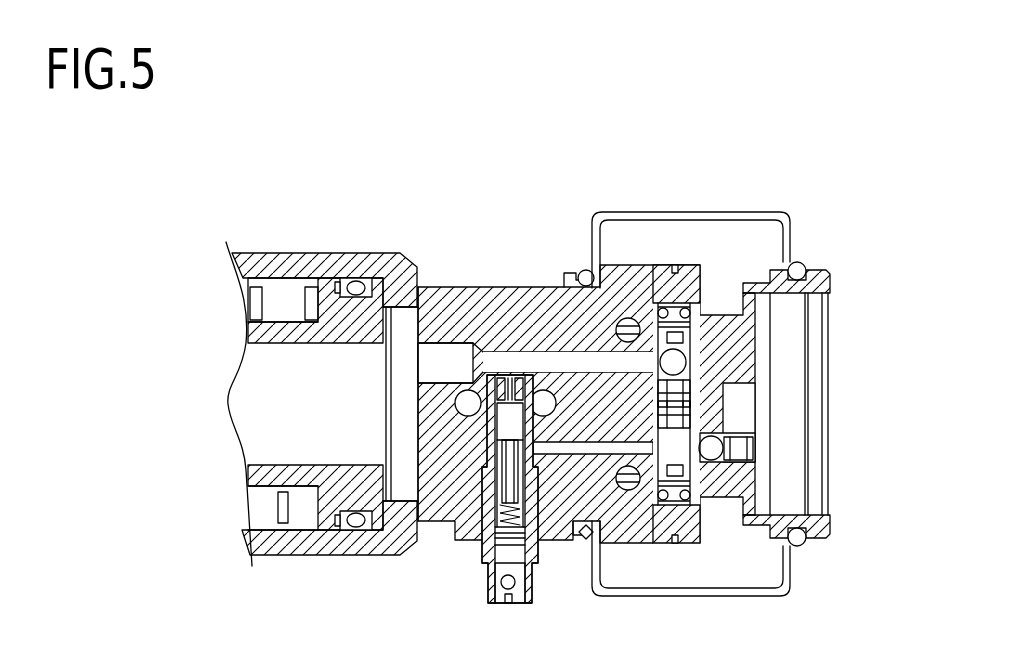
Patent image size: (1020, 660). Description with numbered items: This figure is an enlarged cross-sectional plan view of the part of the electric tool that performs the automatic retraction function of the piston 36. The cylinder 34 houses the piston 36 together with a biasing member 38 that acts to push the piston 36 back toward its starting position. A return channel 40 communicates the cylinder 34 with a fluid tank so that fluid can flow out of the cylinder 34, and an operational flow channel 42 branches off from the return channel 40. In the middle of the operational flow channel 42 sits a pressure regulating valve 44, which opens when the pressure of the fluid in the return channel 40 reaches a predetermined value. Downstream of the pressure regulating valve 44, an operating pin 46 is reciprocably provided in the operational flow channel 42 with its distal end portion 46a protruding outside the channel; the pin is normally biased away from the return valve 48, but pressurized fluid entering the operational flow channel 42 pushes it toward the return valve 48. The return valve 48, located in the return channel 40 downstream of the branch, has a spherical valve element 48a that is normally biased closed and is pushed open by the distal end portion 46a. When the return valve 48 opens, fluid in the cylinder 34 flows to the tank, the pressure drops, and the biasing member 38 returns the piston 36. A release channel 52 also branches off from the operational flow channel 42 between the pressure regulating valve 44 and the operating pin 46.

The cylinder 34 is at (262, 270).
The piston 36 is at (367, 318).
The biasing member 38 is at (308, 298).
The return channel 40 is at (517, 363).
The operational flow channel 42 is at (595, 450).
The pressure regulating valve 44 is at (507, 422).
The operating pin 46 is at (750, 437).
The distal end portion 46a is at (757, 390).
The return valve 48 is at (830, 273).
The spherical valve element 48a is at (770, 350).
The release channel 52 is at (545, 403).